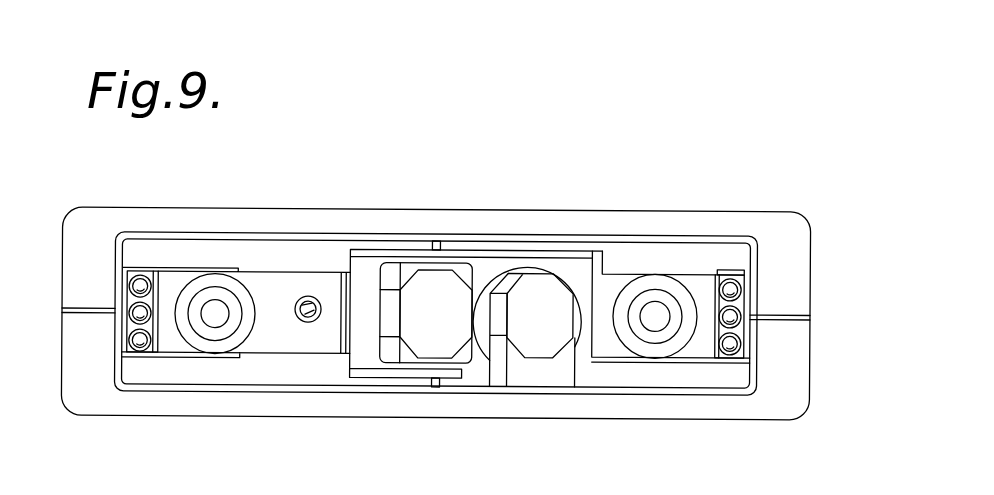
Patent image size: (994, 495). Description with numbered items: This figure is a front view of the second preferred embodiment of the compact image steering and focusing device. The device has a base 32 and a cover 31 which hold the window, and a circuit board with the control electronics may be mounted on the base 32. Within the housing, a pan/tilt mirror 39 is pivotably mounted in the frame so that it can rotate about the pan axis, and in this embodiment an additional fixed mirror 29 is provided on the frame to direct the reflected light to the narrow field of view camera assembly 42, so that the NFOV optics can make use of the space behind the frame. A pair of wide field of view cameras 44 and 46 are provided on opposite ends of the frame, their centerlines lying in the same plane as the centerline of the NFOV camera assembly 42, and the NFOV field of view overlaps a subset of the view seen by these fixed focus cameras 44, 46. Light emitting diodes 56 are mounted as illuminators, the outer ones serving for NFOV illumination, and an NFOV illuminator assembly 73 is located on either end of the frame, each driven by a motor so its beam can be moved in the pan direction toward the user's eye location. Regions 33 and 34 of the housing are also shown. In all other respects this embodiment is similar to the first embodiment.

The fixed mirror 29 is at (542, 330).
The cover 31 is at (797, 251).
The base 32 is at (777, 392).
The recess floor 33 is at (277, 373).
The recess wall 34 is at (283, 247).
The pan/tilt mirror 39 is at (430, 327).
The NFOV camera assembly 42 is at (487, 272).
The WFOV camera 44 is at (232, 342).
The WFOV camera 46 is at (667, 285).
The light emitting diodes 56 is at (128, 313).
The NFOV illuminator assembly 73 is at (158, 285).